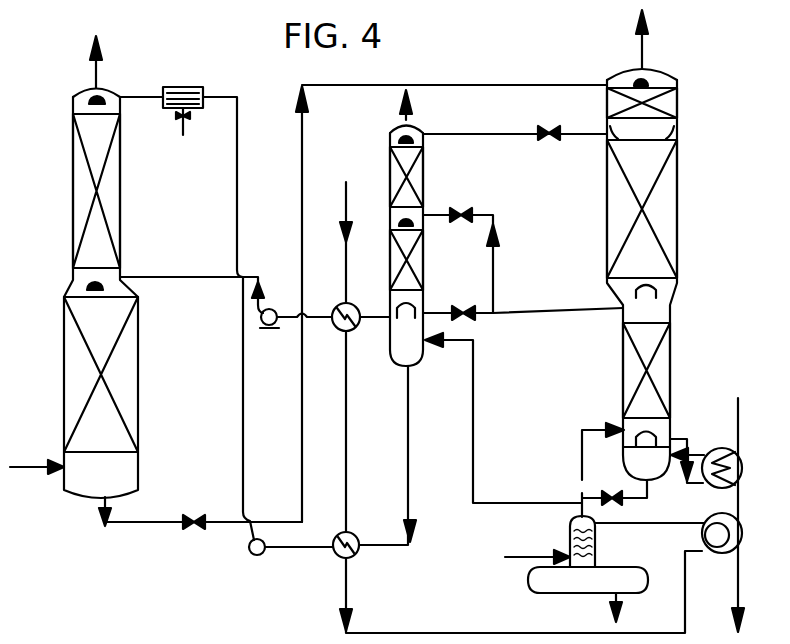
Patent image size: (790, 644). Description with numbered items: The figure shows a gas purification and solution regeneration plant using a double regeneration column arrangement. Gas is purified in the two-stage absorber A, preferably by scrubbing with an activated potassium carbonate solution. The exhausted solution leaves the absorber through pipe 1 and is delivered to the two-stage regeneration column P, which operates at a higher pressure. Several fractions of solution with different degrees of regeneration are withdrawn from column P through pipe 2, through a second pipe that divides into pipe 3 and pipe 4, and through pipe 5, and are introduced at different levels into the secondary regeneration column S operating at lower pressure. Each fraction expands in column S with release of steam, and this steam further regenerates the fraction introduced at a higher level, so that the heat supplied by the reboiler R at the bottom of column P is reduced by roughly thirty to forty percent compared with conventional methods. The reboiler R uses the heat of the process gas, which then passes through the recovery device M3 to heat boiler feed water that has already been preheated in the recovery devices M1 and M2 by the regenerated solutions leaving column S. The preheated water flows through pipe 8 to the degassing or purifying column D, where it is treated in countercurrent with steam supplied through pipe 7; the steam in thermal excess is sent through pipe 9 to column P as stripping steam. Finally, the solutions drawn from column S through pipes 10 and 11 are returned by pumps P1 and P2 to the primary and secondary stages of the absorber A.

The absorber A is at (74, 267).
The secondary regeneration column S is at (428, 184).
The regeneration column P is at (684, 170).
The degassing or purifying column D is at (588, 569).
The reboiler R is at (706, 456).
The recovery device M1 is at (336, 301).
The recovery device M2 is at (358, 534).
The recovery device M3 is at (722, 551).
The pump P1 is at (270, 333).
The pump P2 is at (257, 565).
The pipe 1 is at (200, 525).
The pipe 2 is at (515, 120).
The pipe 3 is at (461, 251).
The pipe 4 is at (523, 305).
The pipe 5 is at (503, 418).
The pipe 7 is at (537, 548).
The pipe 8 is at (649, 535).
The pipe 9 is at (593, 470).
The pipe 10 is at (375, 300).
The pipe 11 is at (299, 559).